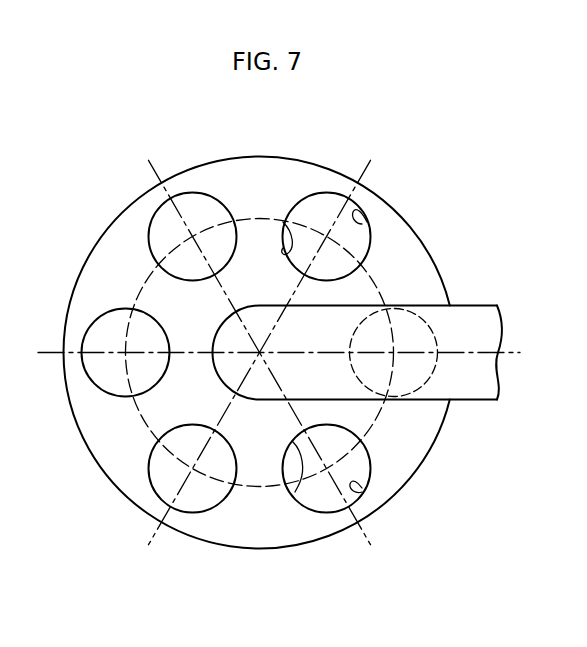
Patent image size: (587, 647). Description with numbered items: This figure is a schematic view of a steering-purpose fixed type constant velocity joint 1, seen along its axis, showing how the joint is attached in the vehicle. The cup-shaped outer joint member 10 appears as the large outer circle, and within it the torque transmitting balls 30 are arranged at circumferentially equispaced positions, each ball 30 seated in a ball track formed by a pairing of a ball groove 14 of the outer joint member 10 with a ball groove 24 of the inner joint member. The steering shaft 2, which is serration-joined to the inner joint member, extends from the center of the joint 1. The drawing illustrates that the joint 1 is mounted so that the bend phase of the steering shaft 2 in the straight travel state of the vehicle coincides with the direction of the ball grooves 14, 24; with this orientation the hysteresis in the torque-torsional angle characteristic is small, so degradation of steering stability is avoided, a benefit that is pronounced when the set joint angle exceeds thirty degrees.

The constant velocity joint 1 is at (345, 168).
The steering shaft 2 is at (478, 315).
The outer joint member 10 is at (100, 238).
The ball groove 14 is at (367, 222).
The ball groove 24 is at (283, 222).
The torque transmitting ball 30 is at (310, 207).